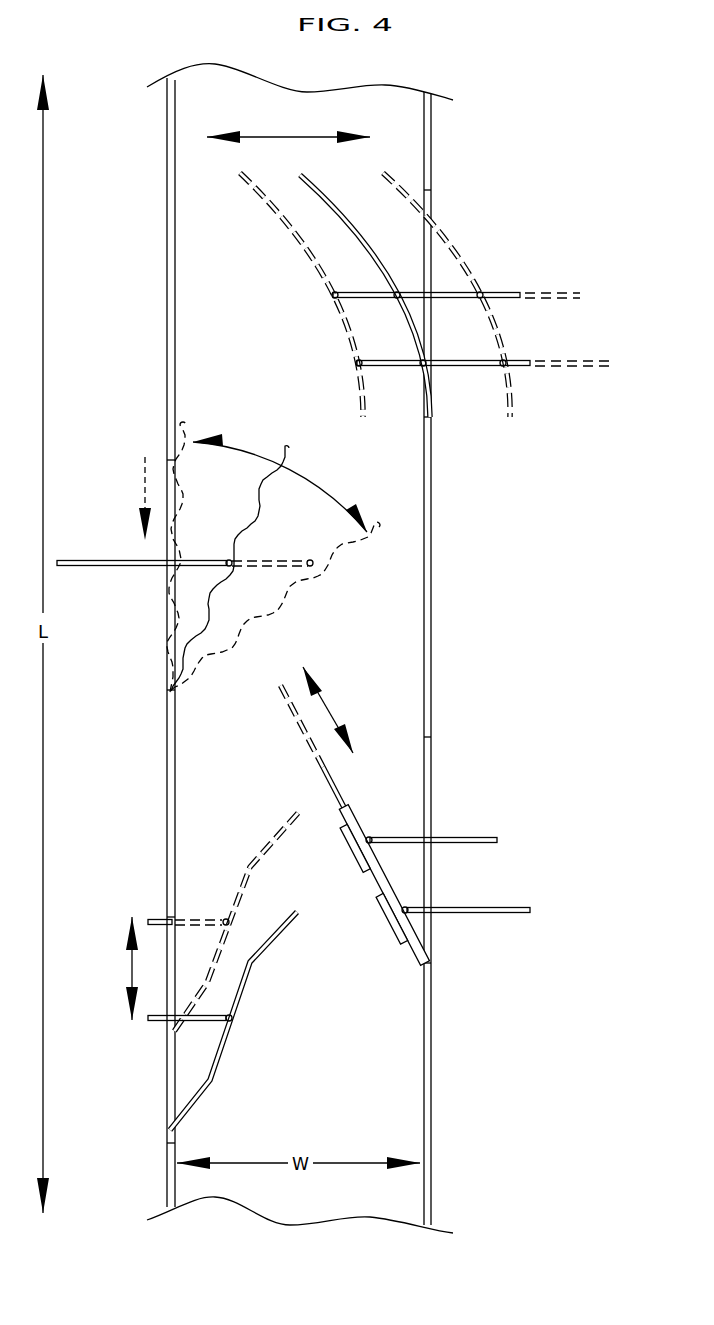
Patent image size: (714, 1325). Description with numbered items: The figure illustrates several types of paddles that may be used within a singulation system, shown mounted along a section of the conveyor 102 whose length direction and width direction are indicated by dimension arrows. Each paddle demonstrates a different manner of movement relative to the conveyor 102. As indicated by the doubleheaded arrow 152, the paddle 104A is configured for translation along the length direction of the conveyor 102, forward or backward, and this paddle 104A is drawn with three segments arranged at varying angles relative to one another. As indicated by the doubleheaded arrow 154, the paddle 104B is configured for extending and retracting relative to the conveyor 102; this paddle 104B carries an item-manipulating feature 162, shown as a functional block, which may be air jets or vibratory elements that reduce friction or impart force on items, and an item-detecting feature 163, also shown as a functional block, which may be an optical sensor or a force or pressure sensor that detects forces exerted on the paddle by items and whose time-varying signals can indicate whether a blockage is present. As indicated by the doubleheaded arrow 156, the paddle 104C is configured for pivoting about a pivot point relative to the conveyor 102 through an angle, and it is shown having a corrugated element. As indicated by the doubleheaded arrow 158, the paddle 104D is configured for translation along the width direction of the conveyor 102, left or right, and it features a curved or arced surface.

The conveyor 102 is at (190, 268).
The paddle 104A is at (213, 1068).
The paddle 104B is at (427, 957).
The paddle 104C is at (172, 610).
The paddle 104D is at (430, 412).
The doubleheaded arrow 152 is at (127, 966).
The doubleheaded arrow 154 is at (325, 707).
The doubleheaded arrow 156 is at (311, 485).
The doubleheaded arrow 158 is at (279, 137).
The item-manipulating feature 162 is at (392, 933).
The item-detecting feature 163 is at (338, 855).